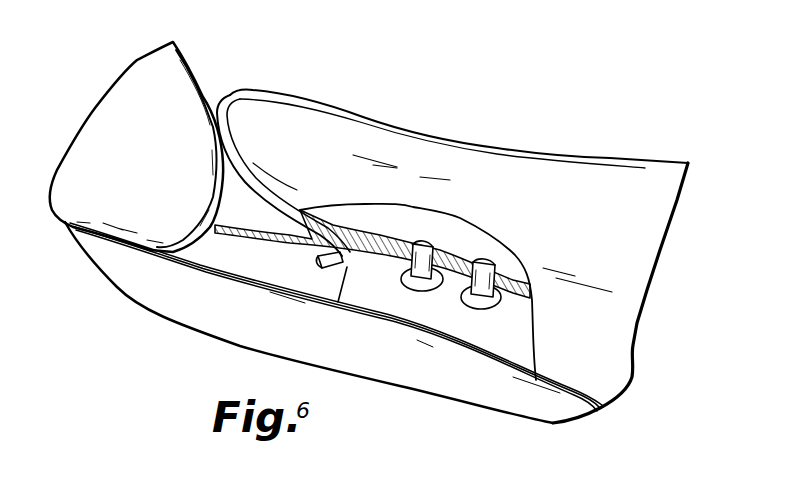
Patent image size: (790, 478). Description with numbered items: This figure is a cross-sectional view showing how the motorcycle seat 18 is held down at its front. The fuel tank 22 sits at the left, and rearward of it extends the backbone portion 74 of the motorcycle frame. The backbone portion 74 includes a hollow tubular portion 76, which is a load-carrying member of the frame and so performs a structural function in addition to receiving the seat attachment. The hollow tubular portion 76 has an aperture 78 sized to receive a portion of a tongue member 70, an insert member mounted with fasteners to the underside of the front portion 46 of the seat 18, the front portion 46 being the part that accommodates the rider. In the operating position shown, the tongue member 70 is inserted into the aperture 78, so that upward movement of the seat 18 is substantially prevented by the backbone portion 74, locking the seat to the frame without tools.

The seat 18 is at (645, 153).
The fuel tank 22 is at (146, 155).
The front portion 46 is at (607, 237).
The tongue member 70 is at (369, 268).
The backbone portion 74 is at (232, 252).
The hollow tubular portion 76 is at (252, 232).
The aperture 78 is at (316, 284).